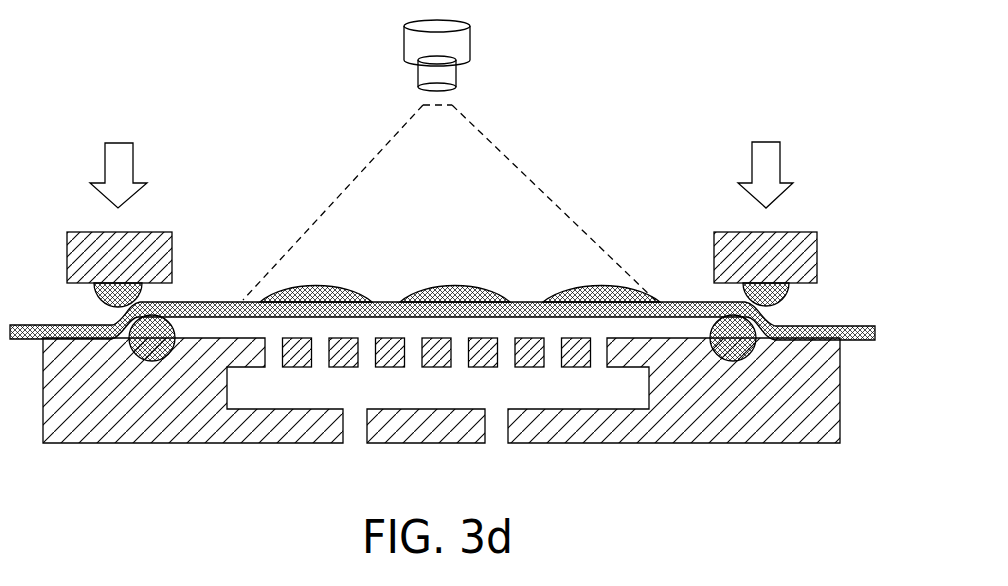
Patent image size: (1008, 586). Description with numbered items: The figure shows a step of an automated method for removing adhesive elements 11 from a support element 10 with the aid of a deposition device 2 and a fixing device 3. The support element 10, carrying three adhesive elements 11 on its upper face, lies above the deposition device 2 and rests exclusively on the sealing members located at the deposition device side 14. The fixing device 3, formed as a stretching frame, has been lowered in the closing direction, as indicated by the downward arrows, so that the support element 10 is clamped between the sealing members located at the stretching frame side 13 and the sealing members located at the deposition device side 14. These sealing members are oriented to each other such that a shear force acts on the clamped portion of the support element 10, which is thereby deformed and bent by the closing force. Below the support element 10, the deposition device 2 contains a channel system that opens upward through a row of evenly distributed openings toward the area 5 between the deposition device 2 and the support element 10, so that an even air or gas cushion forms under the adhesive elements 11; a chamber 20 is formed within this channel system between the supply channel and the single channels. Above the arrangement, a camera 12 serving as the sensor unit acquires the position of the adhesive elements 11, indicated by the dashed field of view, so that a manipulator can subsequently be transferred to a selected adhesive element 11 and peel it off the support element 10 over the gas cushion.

The deposition device 2 is at (840, 423).
The fixing device 3 is at (172, 255).
The area 5 is at (381, 332).
The support element 10 is at (857, 326).
The adhesive element 11 is at (320, 282).
The camera 12 is at (455, 38).
The sealing member located at the stretching frame side 13 is at (95, 299).
The sealing member located at the deposition device side 14 is at (176, 328).
The chamber 20 is at (485, 387).